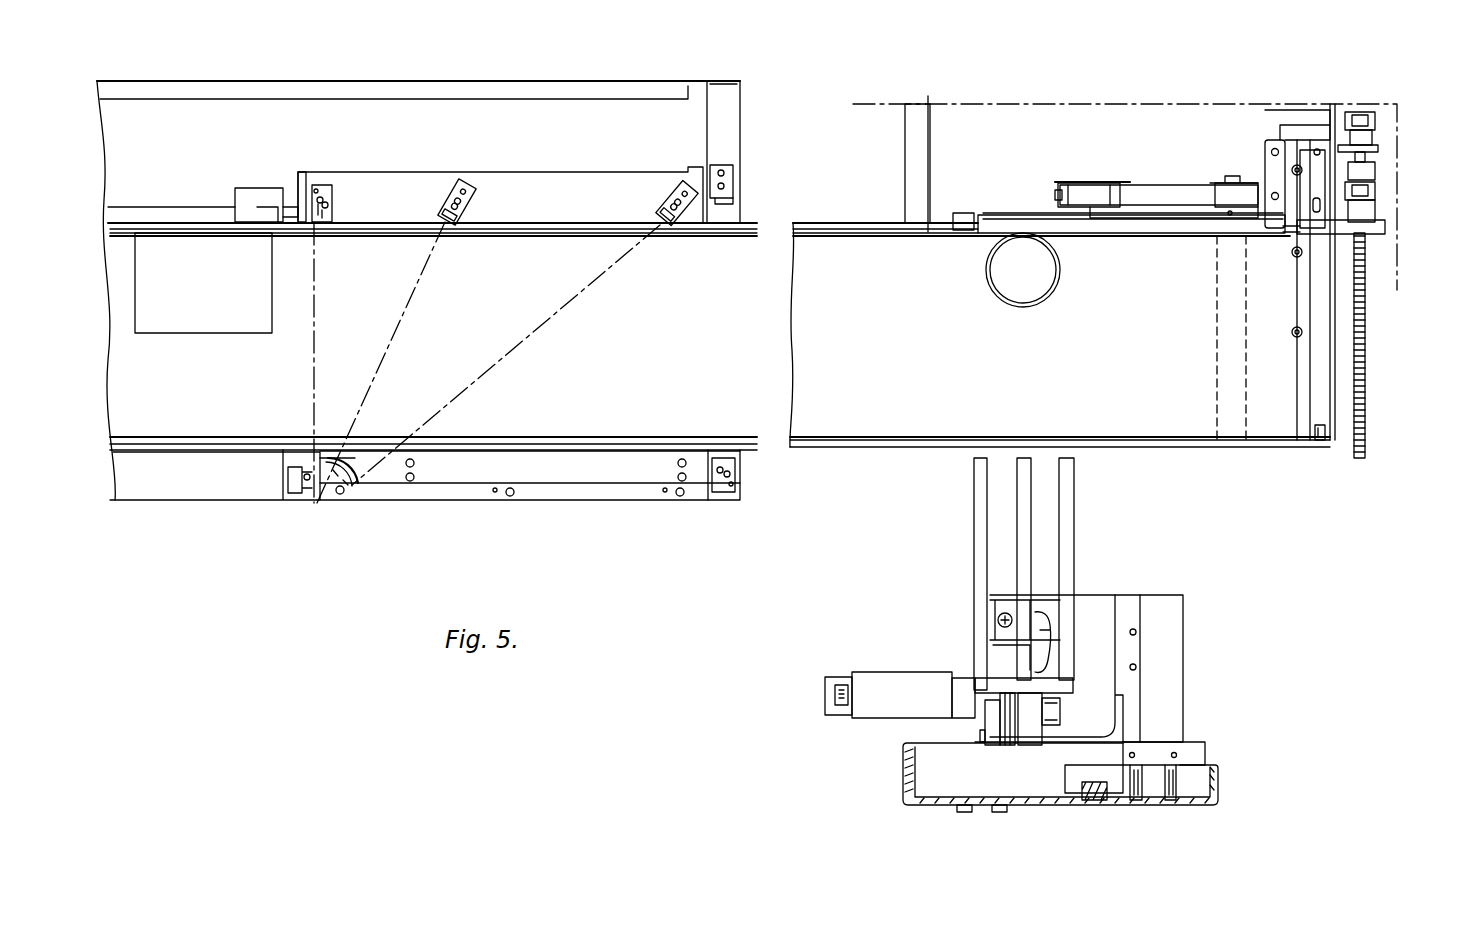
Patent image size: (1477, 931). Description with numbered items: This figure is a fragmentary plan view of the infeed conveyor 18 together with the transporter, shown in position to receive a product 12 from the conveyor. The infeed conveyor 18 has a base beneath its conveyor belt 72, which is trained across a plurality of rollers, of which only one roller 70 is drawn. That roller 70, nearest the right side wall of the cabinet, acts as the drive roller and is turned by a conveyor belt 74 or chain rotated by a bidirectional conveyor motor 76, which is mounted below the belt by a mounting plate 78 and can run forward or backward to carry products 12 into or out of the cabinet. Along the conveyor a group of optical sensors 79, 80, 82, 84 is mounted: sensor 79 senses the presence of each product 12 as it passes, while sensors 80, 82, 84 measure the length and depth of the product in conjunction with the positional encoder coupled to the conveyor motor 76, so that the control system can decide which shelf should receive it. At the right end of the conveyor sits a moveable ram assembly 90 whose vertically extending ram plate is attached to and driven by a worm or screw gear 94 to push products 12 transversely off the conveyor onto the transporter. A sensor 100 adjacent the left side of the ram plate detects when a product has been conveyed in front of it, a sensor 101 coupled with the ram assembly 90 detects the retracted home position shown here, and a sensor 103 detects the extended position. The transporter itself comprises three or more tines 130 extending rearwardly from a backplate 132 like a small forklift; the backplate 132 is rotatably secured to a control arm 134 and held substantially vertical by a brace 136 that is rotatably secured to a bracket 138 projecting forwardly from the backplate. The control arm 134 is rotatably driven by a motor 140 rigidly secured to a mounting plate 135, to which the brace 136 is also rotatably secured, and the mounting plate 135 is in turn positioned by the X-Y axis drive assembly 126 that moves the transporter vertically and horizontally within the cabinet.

The infeed conveyor 18 is at (777, 134).
The sensor 79 is at (262, 210).
The sensor 80 is at (320, 206).
The sensor 82 is at (474, 209).
The sensor 84 is at (660, 206).
The mounting plate 78 is at (1030, 218).
The sensor 100 is at (963, 224).
The product 12 is at (1010, 289).
The conveyor belt 72 is at (1060, 396).
The roller 70 is at (1225, 298).
The conveyor motor 76 is at (1093, 212).
The conveyor belt 74 is at (1170, 190).
The sensor 101 is at (1343, 215).
The ram assembly 90 is at (1372, 330).
The screw gear 94 is at (1362, 370).
The sensor 103 is at (1328, 448).
The tines 130 is at (974, 515).
The motor 140 is at (875, 668).
The backplate 132 is at (990, 686).
The bracket 138 is at (1005, 708).
The brace 136 is at (992, 740).
The control arm 134 is at (1032, 740).
The X-Y axis drive assembly 126 is at (902, 790).
The mounting plate 135 is at (1207, 672).